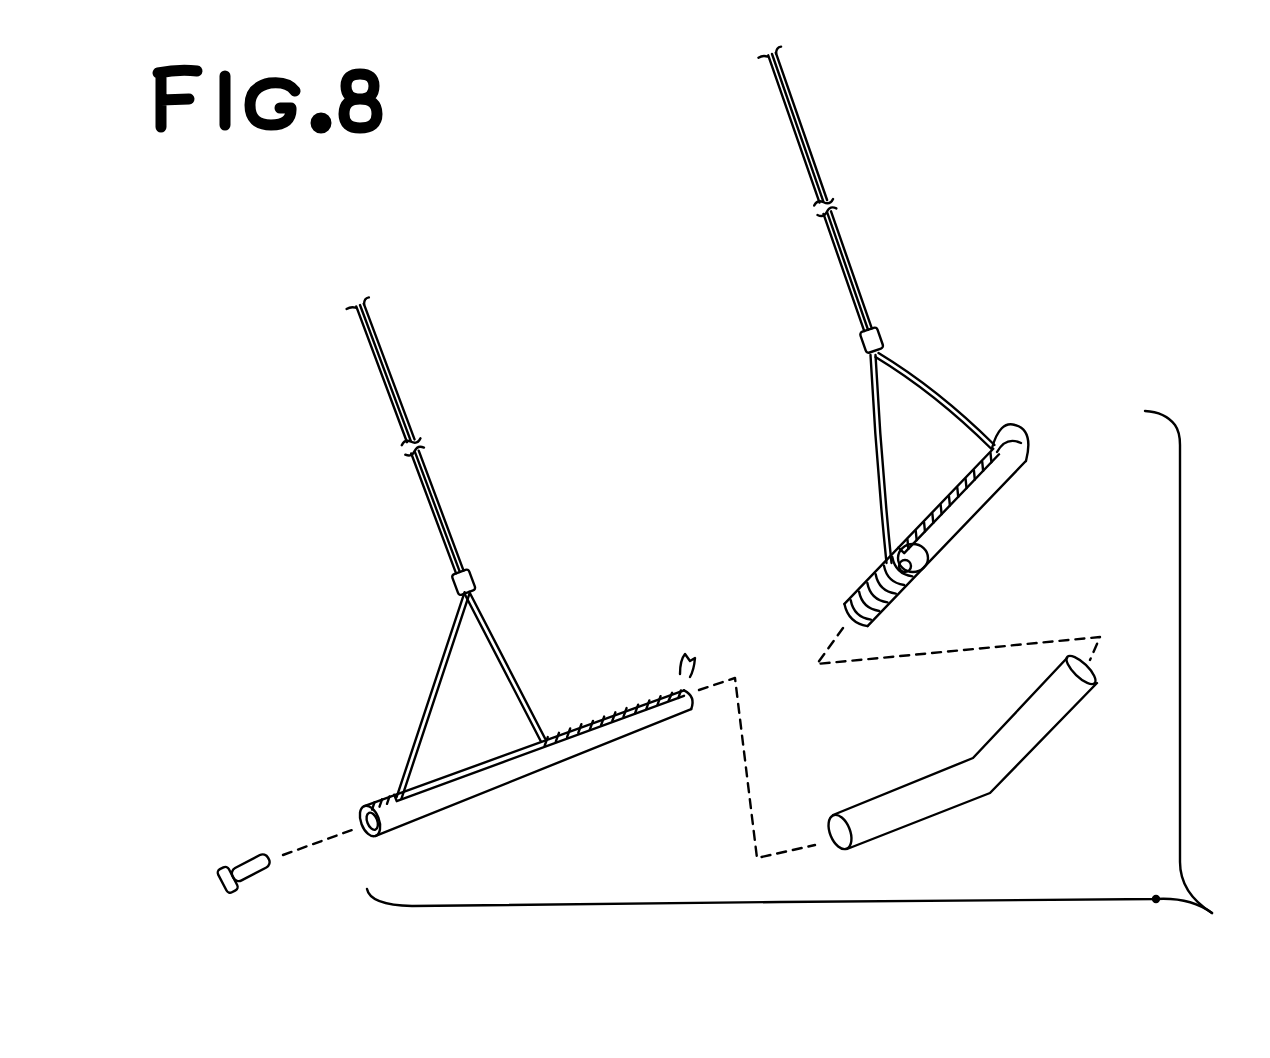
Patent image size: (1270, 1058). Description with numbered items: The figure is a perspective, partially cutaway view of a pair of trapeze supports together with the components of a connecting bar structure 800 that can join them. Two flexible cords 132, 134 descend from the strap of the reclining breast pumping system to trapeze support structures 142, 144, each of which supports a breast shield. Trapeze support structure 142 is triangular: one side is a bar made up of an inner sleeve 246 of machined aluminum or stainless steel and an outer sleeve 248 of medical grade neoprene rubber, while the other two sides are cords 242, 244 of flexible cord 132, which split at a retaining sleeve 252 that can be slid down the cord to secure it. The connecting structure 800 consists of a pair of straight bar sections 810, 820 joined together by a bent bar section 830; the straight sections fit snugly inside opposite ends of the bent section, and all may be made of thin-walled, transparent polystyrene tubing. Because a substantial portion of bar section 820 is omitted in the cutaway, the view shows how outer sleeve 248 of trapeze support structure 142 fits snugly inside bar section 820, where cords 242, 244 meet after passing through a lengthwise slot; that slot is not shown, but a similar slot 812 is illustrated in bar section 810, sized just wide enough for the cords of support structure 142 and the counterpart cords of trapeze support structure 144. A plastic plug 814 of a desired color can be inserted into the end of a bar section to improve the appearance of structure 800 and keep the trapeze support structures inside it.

The flexible cord 132 is at (808, 147).
The flexible cord 134 is at (371, 323).
The trapeze support structure 142 is at (907, 460).
The trapeze support structure 144 is at (527, 680).
The cord 242 is at (947, 397).
The cord 244 is at (878, 502).
The inner sleeve 246 is at (918, 575).
The outer sleeve 248 is at (953, 537).
The retaining sleeve 252 is at (881, 336).
The structure 800 is at (810, 679).
The straight bar section 810 is at (610, 742).
The slot 812 is at (689, 650).
The plug 814 is at (252, 853).
The straight bar section 820 is at (860, 585).
The bent bar section 830 is at (963, 802).